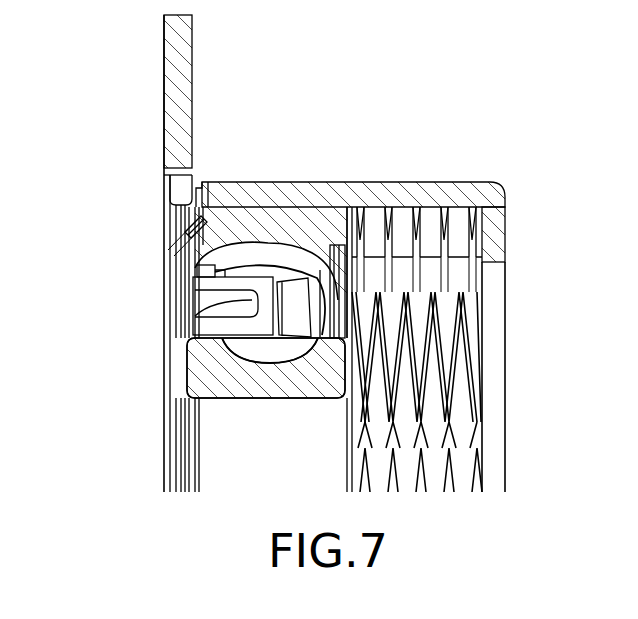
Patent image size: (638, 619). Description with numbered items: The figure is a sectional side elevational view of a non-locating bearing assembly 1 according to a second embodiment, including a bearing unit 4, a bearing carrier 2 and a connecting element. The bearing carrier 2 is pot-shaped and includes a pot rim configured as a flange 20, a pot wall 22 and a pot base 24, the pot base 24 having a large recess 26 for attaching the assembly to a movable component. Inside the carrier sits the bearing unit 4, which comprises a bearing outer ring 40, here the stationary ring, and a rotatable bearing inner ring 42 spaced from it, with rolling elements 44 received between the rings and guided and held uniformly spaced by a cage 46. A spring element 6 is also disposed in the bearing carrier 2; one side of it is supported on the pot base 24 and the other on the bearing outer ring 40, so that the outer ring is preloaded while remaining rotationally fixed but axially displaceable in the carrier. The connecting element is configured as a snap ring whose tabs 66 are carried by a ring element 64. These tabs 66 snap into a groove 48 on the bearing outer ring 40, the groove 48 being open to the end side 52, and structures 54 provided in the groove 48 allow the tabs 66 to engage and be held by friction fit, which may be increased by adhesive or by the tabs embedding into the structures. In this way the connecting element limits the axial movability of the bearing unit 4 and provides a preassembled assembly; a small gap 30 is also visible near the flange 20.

The non-locating bearing assembly 1 is at (340, 68).
The bearing carrier 2 is at (136, 65).
The bearing unit 4 is at (140, 343).
The spring element 6 is at (436, 247).
The flange 20 is at (183, 42).
The pot wall 22 is at (413, 197).
The pot base 24 is at (493, 244).
The recess 26 is at (500, 377).
The gap 30 is at (203, 183).
The bearing outer ring 40 is at (212, 250).
The bearing inner ring 42 is at (287, 392).
The rolling elements 44 is at (250, 352).
The cage 46 is at (240, 323).
The groove 48 is at (205, 232).
The end side 52 is at (187, 232).
The structures 54 is at (207, 237).
The ring element 64 is at (210, 200).
The tabs 66 is at (180, 223).